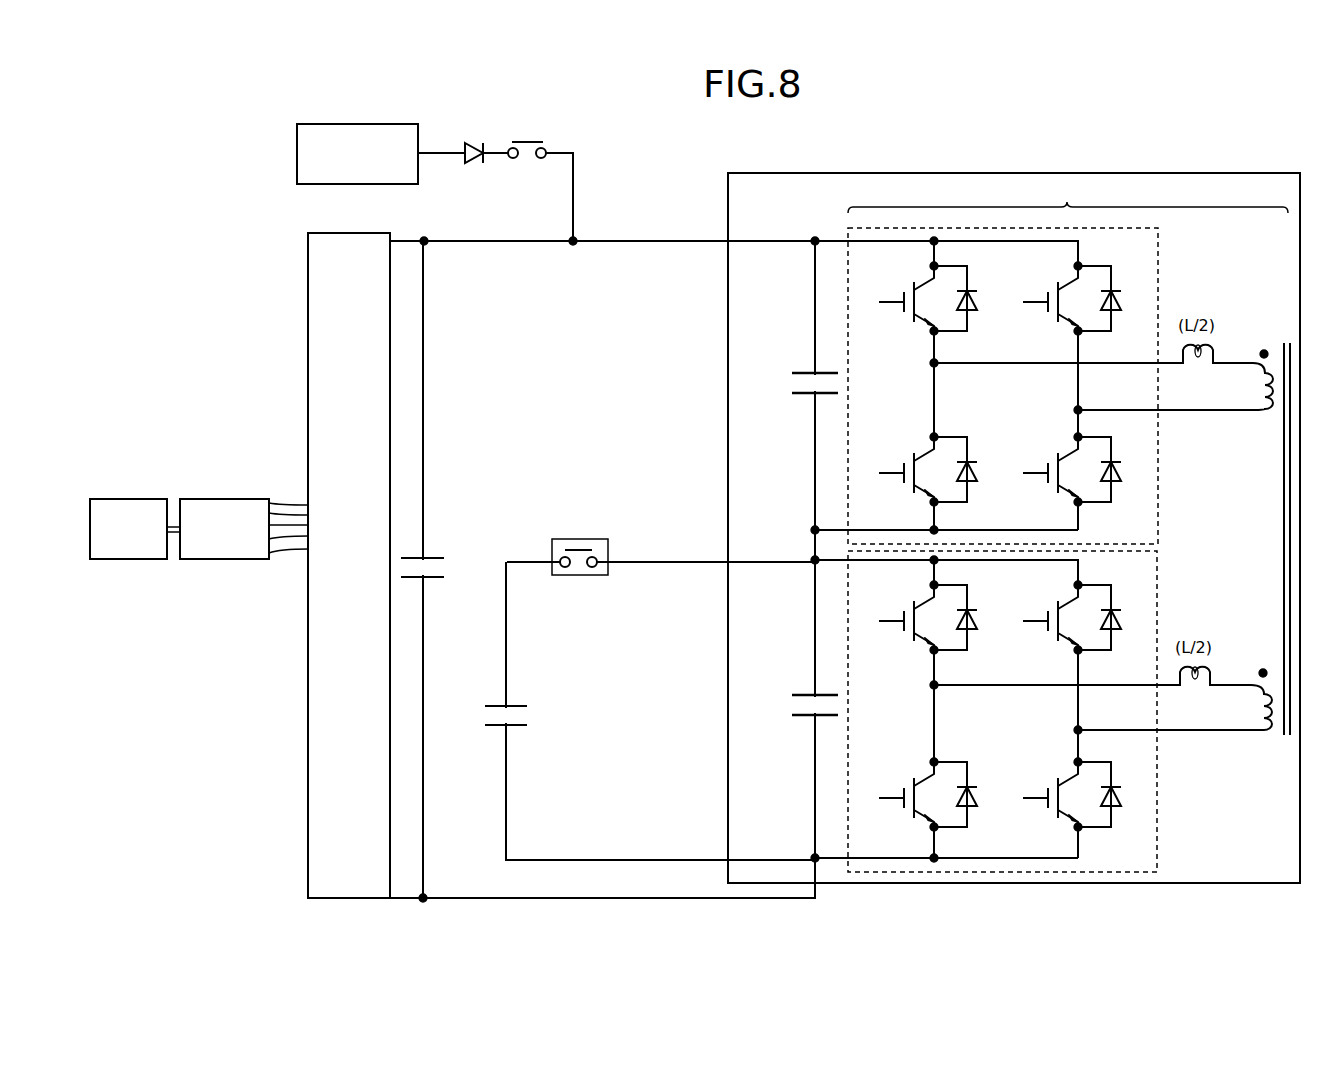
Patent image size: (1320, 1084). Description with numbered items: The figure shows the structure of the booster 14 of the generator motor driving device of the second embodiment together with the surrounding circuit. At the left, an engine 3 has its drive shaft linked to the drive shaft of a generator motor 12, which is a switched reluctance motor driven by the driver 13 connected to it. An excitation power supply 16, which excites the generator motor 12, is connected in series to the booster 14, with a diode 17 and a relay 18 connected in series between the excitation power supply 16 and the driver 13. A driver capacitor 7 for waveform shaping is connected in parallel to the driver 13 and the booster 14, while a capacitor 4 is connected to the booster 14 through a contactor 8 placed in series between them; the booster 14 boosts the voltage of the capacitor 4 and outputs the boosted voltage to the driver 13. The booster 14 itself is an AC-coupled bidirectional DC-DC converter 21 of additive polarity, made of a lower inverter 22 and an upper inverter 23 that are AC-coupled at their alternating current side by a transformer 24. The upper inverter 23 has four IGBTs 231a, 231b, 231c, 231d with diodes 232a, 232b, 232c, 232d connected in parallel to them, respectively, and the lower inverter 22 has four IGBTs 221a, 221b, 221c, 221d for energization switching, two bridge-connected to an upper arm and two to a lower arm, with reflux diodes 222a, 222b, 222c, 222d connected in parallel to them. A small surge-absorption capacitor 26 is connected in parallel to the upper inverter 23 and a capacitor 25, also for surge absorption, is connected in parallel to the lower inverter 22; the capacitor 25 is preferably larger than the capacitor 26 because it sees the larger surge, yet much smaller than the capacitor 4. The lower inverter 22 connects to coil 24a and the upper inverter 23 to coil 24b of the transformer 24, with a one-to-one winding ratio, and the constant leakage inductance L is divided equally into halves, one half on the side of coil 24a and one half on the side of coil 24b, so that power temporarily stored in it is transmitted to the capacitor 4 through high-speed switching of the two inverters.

The engine 3 is at (144, 499).
The generator motor 12 is at (253, 499).
The driver 13 is at (353, 233).
The excitation power supply 16 is at (372, 124).
The diode 17 is at (475, 140).
The relay 18 is at (525, 143).
The driver capacitor 7 is at (428, 557).
The contactor 8 is at (592, 539).
The capacitor 4 is at (511, 707).
The booster 14 is at (1222, 173).
The AC-coupled bidirectional DC-DC converter 21 is at (1068, 197).
The lower inverter 22 is at (1157, 578).
The upper inverter 23 is at (1158, 260).
The transformer 24 is at (1272, 503).
The coil 24a is at (1261, 671).
The coil 24b is at (1262, 352).
The capacitor 25 is at (807, 695).
The capacitor 26 is at (807, 373).
The IGBT 231a is at (914, 284).
The IGBT 231b is at (1057, 284).
The IGBT 231c is at (914, 455).
The IGBT 231d is at (1057, 455).
The diode 232a is at (977, 302).
The diode 232b is at (1121, 302).
The diode 232c is at (977, 473).
The diode 232d is at (1122, 476).
The IGBT 221a is at (914, 603).
The IGBT 221b is at (1057, 603).
The IGBT 221c is at (914, 777).
The IGBT 221d is at (1057, 777).
The diode 222a is at (977, 621).
The diode 222b is at (1121, 621).
The diode 222c is at (977, 798).
The diode 222d is at (1122, 800).